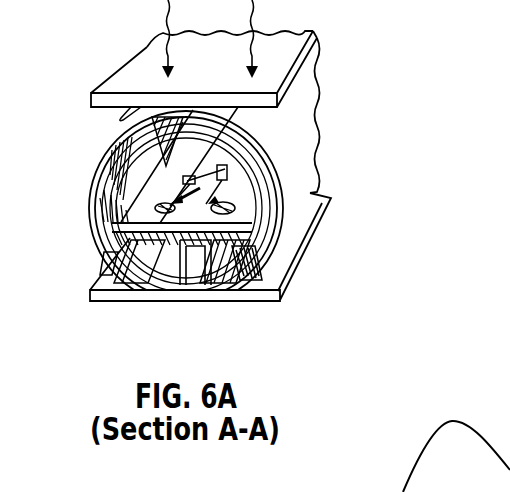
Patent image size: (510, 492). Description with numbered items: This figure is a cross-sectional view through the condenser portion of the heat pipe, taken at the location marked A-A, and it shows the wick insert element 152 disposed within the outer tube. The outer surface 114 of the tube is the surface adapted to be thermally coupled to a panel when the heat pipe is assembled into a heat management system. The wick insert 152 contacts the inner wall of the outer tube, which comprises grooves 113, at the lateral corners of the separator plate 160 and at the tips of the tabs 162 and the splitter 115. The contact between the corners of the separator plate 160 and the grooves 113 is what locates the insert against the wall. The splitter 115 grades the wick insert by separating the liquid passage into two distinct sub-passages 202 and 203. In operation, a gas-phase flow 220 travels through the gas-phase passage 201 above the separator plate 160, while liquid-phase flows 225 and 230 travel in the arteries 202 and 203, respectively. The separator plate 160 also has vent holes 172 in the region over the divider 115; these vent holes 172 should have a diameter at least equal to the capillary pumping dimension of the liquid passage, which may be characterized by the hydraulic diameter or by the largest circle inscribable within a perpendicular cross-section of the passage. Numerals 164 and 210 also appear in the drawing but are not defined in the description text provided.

The surface 114 is at (147, 47).
The gas-phase flow 220 is at (243, 107).
The gas-phase passage 201 is at (222, 152).
The wick insert element 152 is at (194, 147).
The outer layer 164 is at (138, 155).
The tabs 162 is at (124, 185).
The separator plate 160 is at (115, 225).
The grooves 113 is at (100, 207).
The vent holes 172 is at (232, 206).
The splitter 115 is at (187, 283).
The sub-passage 202 is at (127, 240).
The fin 210 is at (112, 262).
The liquid-phase flow 225 is at (143, 280).
The sub-passage 203 is at (250, 250).
The liquid-phase flow 230 is at (280, 297).